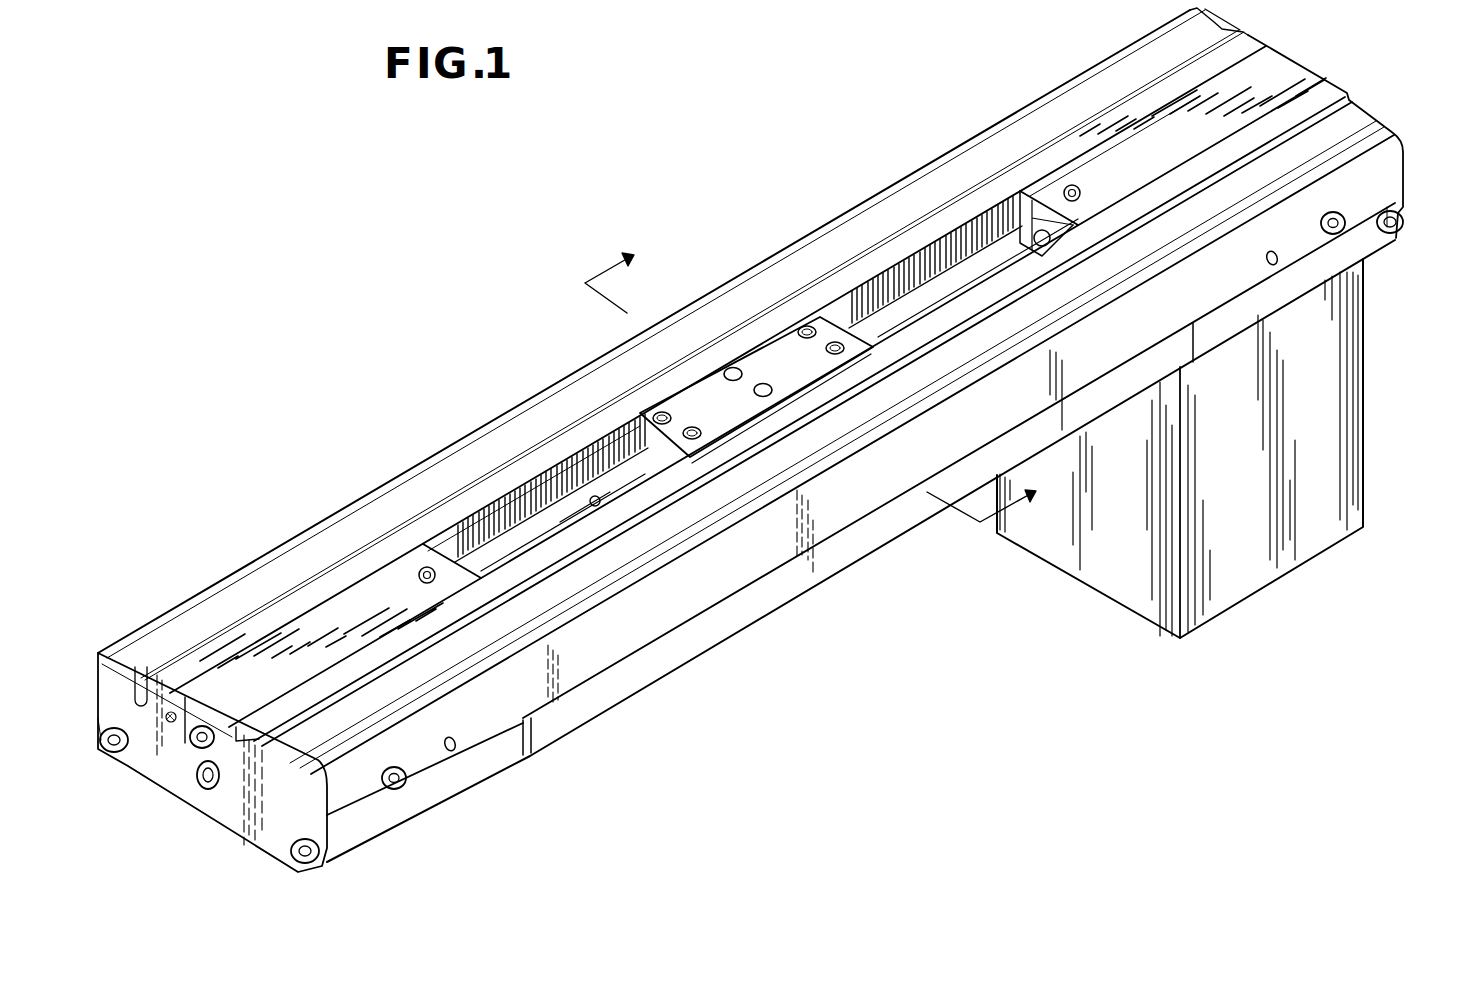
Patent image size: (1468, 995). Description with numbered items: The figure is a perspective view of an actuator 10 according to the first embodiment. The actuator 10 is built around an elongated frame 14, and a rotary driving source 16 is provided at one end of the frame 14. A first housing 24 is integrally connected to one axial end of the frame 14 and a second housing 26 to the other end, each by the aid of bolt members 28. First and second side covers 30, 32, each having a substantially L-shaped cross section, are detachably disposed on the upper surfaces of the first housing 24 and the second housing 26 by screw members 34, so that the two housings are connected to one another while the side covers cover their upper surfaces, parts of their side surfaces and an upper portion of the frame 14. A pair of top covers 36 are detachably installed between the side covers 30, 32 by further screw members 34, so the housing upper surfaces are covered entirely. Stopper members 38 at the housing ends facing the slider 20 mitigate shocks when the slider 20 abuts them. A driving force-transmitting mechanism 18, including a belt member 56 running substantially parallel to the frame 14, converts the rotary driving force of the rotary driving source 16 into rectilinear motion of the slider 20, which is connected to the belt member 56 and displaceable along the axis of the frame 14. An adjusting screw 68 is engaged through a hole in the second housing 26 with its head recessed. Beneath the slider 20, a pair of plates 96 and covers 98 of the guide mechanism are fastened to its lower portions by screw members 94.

The actuator 10 is at (808, 88).
The frame 14 is at (667, 660).
The rotary driving source 16 is at (1330, 422).
The driving force-transmitting mechanism 18 is at (935, 250).
The slider 20 is at (780, 350).
The first housing 24 is at (1365, 262).
The second housing 26 is at (440, 795).
The bolt members 28 is at (1402, 215).
The first side cover 30 is at (610, 658).
The second side cover 32 is at (290, 565).
The screw members 34 is at (1350, 226).
The top covers 36 is at (1285, 75).
The stopper members 38 is at (1040, 225).
The belt member 56 is at (470, 510).
The adjusting screw 68 is at (208, 790).
The screw members 94 is at (590, 512).
The plates 96 is at (545, 495).
The covers 98 is at (617, 488).